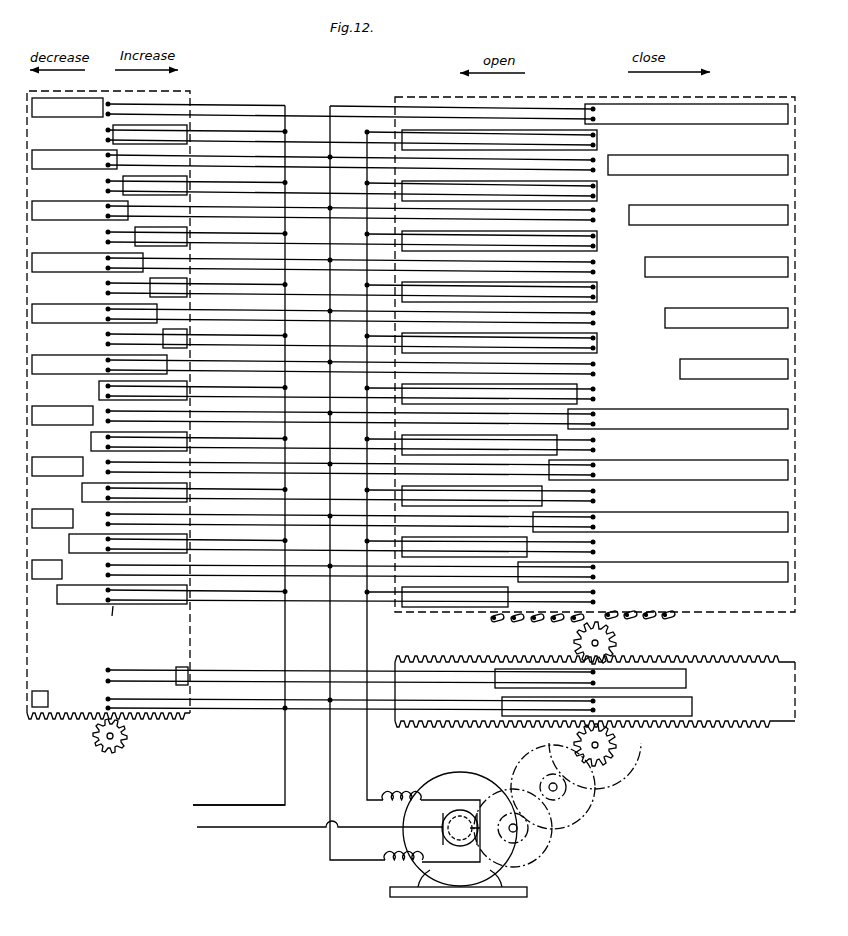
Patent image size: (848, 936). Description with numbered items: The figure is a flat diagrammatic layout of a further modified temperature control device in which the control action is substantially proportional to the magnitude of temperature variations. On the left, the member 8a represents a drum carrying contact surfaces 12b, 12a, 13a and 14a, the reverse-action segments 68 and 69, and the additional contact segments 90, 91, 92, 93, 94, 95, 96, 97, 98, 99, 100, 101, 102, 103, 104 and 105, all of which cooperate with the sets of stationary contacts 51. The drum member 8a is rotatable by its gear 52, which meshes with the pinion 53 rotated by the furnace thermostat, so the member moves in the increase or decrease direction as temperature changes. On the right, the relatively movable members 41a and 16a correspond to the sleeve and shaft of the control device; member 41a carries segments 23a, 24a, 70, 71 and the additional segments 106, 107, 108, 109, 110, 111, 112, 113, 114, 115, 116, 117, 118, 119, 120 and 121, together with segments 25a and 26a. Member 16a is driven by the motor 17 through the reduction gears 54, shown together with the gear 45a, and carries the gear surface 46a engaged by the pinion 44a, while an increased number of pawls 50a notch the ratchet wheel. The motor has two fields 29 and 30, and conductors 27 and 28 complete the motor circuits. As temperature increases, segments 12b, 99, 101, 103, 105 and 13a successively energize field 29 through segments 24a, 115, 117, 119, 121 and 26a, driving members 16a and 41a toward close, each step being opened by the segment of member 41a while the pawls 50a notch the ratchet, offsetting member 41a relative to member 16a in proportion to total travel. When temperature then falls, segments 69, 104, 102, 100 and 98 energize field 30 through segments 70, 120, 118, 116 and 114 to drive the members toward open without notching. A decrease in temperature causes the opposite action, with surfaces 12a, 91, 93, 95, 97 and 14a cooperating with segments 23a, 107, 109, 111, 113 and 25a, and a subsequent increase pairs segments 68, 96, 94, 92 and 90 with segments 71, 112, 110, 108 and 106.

The member 8a is at (190, 92).
The contact surface 12b is at (50, 102).
The contact surface 12a is at (192, 130).
The contact segment 90 is at (74, 159).
The contact segment 91 is at (152, 182).
The contact segment 92 is at (80, 210).
The contact segment 93 is at (156, 233).
The contact segment 94 is at (87, 262).
The contact segment 95 is at (157, 284).
The contact segment 96 is at (94, 313).
The contact segment 97 is at (168, 333).
The contact segment 68 is at (99, 364).
The contact segment 98 is at (143, 387).
The contact segment 99 is at (62, 415).
The contact segment 100 is at (140, 438).
The contact segment 101 is at (57, 466).
The contact segment 102 is at (137, 489).
The contact segment 103 is at (52, 518).
The contact segment 104 is at (132, 540).
The contact segment 105 is at (47, 569).
The contact segment 69 is at (122, 594).
The stationary contacts 51 is at (108, 670).
The contact surface 14a is at (182, 666).
The contact surface 13a is at (44, 691).
The gear 52 is at (162, 723).
The pinion 53 is at (121, 747).
The conductor 28 is at (225, 806).
The conductor 27 is at (304, 828).
The field 29 is at (386, 866).
The field 30 is at (396, 796).
The motor 17 is at (497, 874).
The gears 54 is at (583, 820).
The member 41a is at (745, 97).
The contact segment 23a is at (480, 136).
The contact segment 24a is at (655, 120).
The contact segment 106 is at (698, 165).
The contact segment 107 is at (598, 191).
The contact segment 108 is at (708, 215).
The contact segment 109 is at (513, 241).
The contact segment 110 is at (716, 267).
The contact segment 111 is at (598, 292).
The contact segment 112 is at (726, 318).
The contact segment 113 is at (598, 345).
The contact segment 71 is at (734, 369).
The contact segment 114 is at (530, 389).
The contact segment 115 is at (678, 419).
The contact segment 116 is at (510, 440).
The contact segment 117 is at (668, 470).
The contact segment 118 is at (495, 491).
The contact segment 119 is at (660, 522).
The contact segment 120 is at (478, 542).
The contact segment 121 is at (653, 572).
The contact segment 70 is at (425, 608).
The pawls 50a is at (565, 620).
The pinion 44a is at (574, 645).
The pinion 45a is at (617, 648).
The gear surface 46a is at (736, 656).
The contact segment 25a is at (688, 681).
The contact segment 26a is at (694, 708).
The member 16a is at (795, 722).